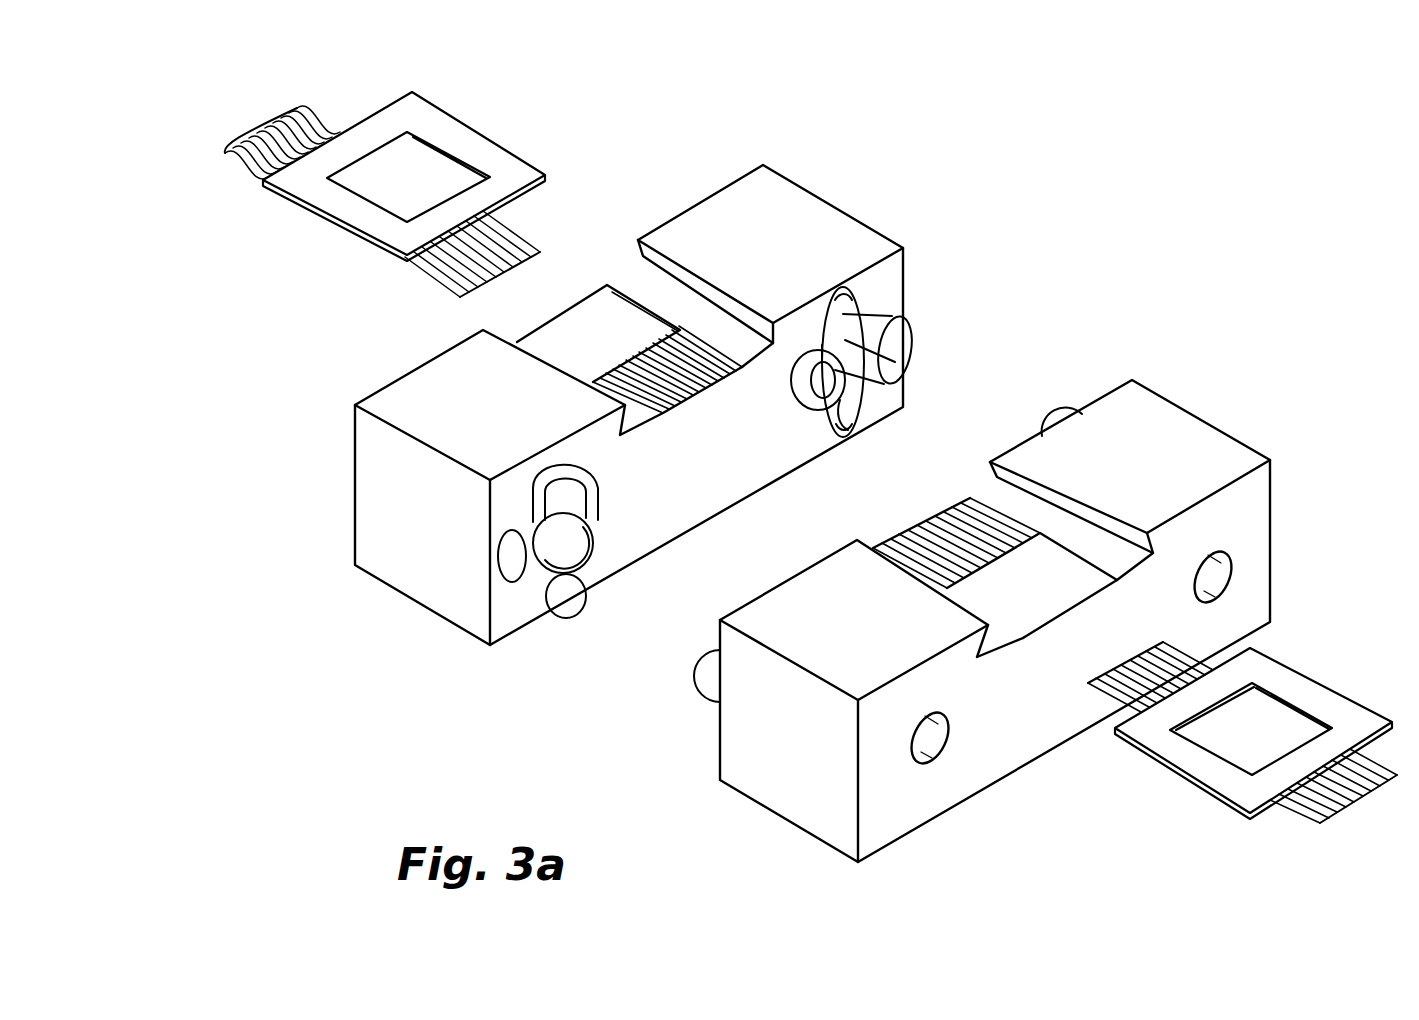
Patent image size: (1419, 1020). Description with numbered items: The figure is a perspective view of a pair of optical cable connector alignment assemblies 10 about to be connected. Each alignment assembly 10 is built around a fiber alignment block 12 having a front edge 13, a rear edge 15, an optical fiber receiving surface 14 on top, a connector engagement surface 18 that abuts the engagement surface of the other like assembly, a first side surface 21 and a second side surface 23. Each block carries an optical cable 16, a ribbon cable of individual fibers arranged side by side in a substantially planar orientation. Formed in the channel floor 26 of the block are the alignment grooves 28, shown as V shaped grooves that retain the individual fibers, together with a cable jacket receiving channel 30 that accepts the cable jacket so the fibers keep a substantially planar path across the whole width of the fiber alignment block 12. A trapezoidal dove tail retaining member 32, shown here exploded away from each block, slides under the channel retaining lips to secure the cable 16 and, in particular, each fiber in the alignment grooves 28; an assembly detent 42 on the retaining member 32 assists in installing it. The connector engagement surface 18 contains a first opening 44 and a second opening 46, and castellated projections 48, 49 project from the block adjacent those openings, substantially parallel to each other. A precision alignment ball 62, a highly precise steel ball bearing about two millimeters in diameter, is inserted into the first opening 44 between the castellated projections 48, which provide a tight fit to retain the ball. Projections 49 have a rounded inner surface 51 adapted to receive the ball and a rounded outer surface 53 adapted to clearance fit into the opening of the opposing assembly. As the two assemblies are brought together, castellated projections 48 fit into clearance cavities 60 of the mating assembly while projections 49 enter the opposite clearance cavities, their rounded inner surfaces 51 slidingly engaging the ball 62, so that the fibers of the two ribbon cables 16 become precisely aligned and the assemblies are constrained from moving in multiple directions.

The optical cable connector alignment assembly 10 is at (912, 187).
The fiber alignment block 12 is at (807, 183).
The front edge 13 is at (895, 398).
The optical fiber receiving surface 14 is at (718, 212).
The rear edge 15 is at (1012, 760).
The optical cable 16 is at (240, 163).
The connector engagement surface 18 is at (690, 496).
The first side surface 21 is at (390, 560).
The second side surface 23 is at (770, 790).
The channel floor 26 is at (513, 565).
The alignment grooves 28 is at (637, 357).
The cable jacket receiving channel 30 is at (595, 307).
The dove tail retaining member 32 is at (470, 132).
The assembly detent 42 is at (392, 192).
The first opening 44 is at (543, 595).
The second opening 46 is at (915, 347).
The castellated projections 48 is at (567, 600).
The castellated projections 49 is at (908, 350).
The rounded inner surface 51 is at (875, 367).
The rounded outer surface 53 is at (883, 323).
The clearance cavities 60 is at (840, 423).
The precision alignment ball 62 is at (595, 570).